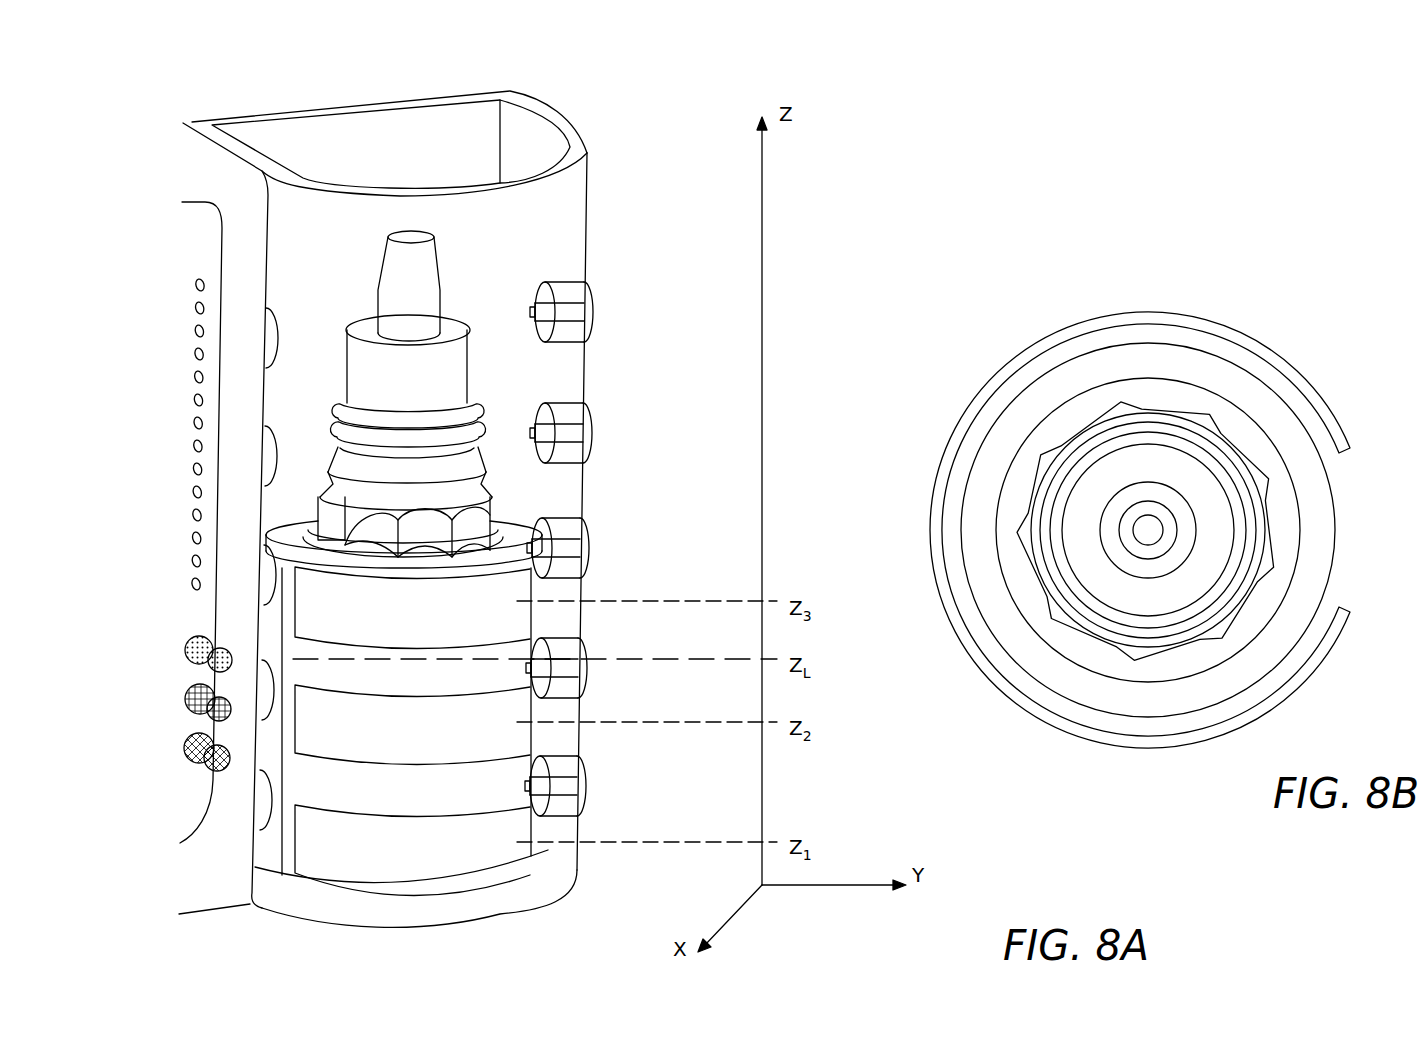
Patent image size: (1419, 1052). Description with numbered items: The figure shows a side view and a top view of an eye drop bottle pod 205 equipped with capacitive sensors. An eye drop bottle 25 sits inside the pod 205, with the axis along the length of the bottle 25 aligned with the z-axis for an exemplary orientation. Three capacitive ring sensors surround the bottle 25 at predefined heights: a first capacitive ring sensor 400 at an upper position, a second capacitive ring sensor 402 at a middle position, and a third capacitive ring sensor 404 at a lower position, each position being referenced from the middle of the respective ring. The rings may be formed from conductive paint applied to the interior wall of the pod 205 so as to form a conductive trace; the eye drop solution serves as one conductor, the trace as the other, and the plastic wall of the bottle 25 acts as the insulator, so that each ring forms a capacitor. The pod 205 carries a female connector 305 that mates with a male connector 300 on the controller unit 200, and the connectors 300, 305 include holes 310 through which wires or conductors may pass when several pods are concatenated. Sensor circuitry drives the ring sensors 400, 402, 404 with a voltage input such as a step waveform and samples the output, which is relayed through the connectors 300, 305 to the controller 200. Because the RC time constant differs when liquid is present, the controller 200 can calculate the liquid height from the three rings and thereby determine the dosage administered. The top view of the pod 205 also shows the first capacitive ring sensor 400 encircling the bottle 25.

In FIG. 8A, the eye drop bottle 25 is at (426, 804).
In FIG. 8B, the eye drop bottle 25 is at (1165, 502).
In FIG. 8A, the controller unit 200 is at (178, 155).
In FIG. 8A, the eye drop bottle pod 205 is at (565, 121).
In FIG. 8B, the eye drop bottle pod 205 is at (1235, 265).
In FIG. 8A, the male connector 300 is at (590, 332).
In FIG. 8A, the female connector 305 is at (275, 330).
In FIG. 8A, the holes 310 is at (590, 312).
In FIG. 8A, the first capacitive ring sensor 400 is at (578, 597).
In FIG. 8B, the first capacitive ring sensor 400 is at (1057, 340).
In FIG. 8A, the second capacitive ring sensor 402 is at (537, 723).
In FIG. 8A, the third capacitive ring sensor 404 is at (572, 832).